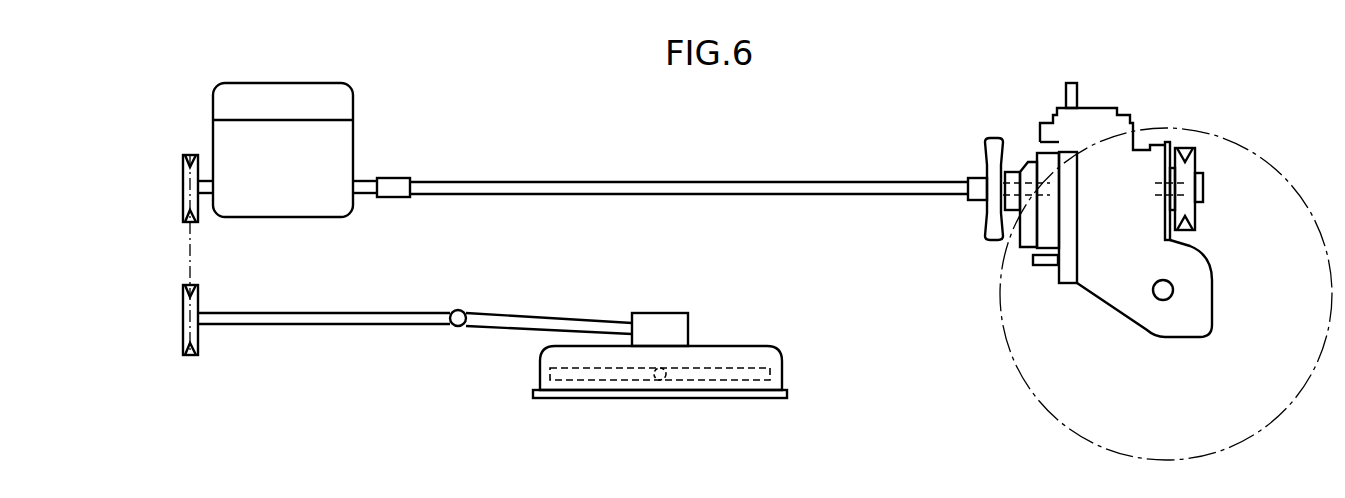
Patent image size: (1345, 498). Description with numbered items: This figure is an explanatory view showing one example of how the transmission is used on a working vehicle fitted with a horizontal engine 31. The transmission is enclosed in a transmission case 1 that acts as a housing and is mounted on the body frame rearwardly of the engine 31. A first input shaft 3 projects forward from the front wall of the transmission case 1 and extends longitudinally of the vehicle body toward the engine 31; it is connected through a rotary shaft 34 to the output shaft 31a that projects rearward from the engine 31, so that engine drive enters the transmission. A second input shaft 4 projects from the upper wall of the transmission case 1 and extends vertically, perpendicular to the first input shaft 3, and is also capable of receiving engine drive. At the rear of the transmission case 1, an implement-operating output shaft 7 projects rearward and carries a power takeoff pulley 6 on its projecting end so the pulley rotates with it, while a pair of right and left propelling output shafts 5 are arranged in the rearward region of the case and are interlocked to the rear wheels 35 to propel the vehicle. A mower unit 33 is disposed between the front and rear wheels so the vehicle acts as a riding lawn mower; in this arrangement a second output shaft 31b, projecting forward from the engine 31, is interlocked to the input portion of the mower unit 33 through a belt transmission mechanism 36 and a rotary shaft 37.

The transmission case 1 is at (1118, 315).
The first input shaft 3 is at (1018, 173).
The second input shaft 4 is at (1077, 95).
The propelling output shafts 5 is at (1172, 290).
The power takeoff pulley 6 is at (1192, 165).
The implement-operating output shaft 7 is at (1192, 210).
The horizontal engine 31 is at (330, 110).
The output shaft 31a is at (366, 183).
The output shaft 31b is at (207, 178).
The mower unit 33 is at (733, 352).
The rotary shaft 34 is at (678, 190).
The rear wheels 35 is at (1002, 327).
The belt transmission mechanism 36 is at (190, 258).
The rotary shaft 37 is at (313, 320).